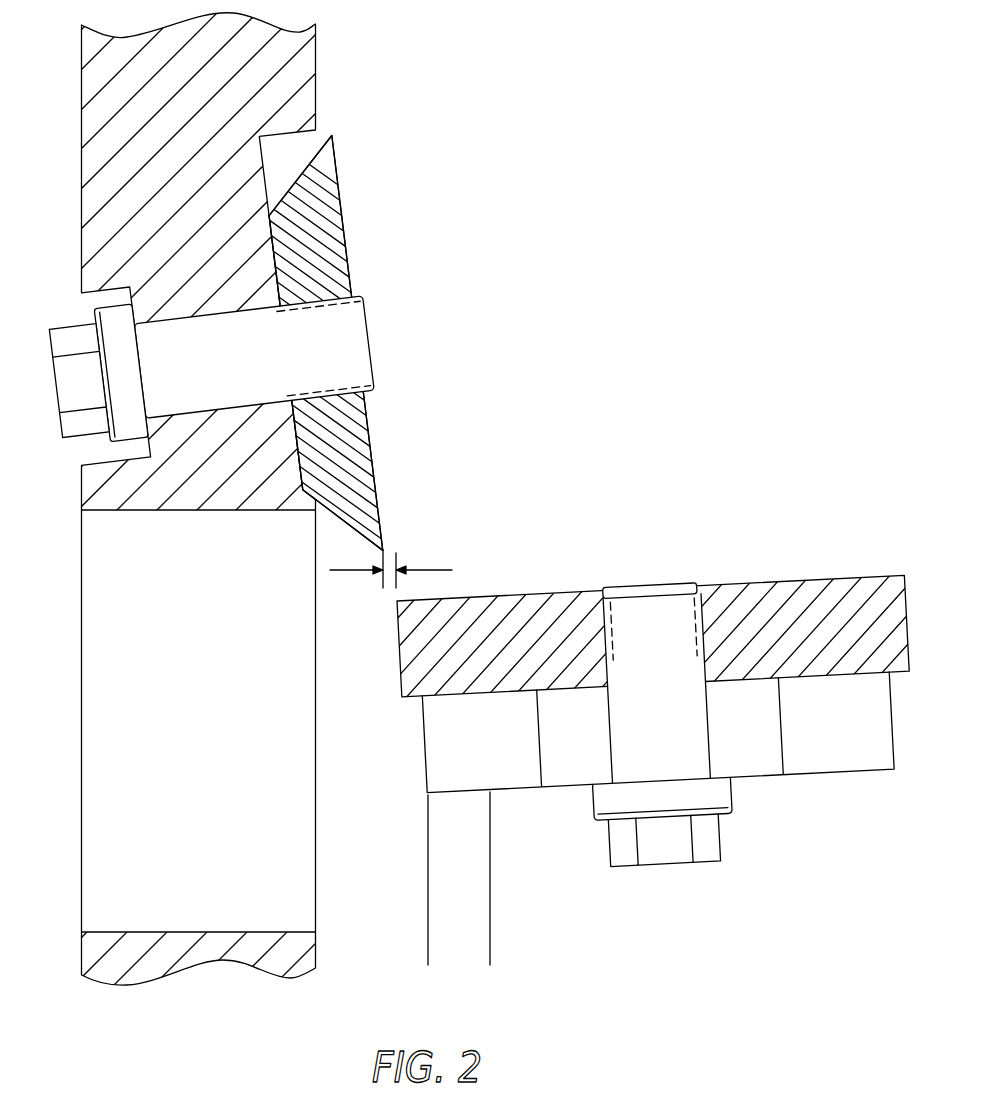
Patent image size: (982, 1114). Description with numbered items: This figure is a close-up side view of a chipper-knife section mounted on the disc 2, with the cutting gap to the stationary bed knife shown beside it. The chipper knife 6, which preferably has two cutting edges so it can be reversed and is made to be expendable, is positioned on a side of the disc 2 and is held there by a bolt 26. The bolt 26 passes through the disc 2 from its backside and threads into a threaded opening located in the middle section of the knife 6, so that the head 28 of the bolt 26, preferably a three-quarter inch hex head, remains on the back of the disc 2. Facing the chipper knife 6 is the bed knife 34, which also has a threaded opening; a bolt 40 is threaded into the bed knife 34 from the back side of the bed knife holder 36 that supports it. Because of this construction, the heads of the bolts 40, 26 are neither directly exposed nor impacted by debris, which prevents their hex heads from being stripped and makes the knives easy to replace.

The disc 2 is at (290, 72).
The chipper knife 6 is at (332, 237).
The bolt 26 is at (353, 348).
The head 28 is at (70, 381).
The bed knife 34 is at (803, 606).
The bed knife holder 36 is at (830, 750).
The bolt 40 is at (710, 795).